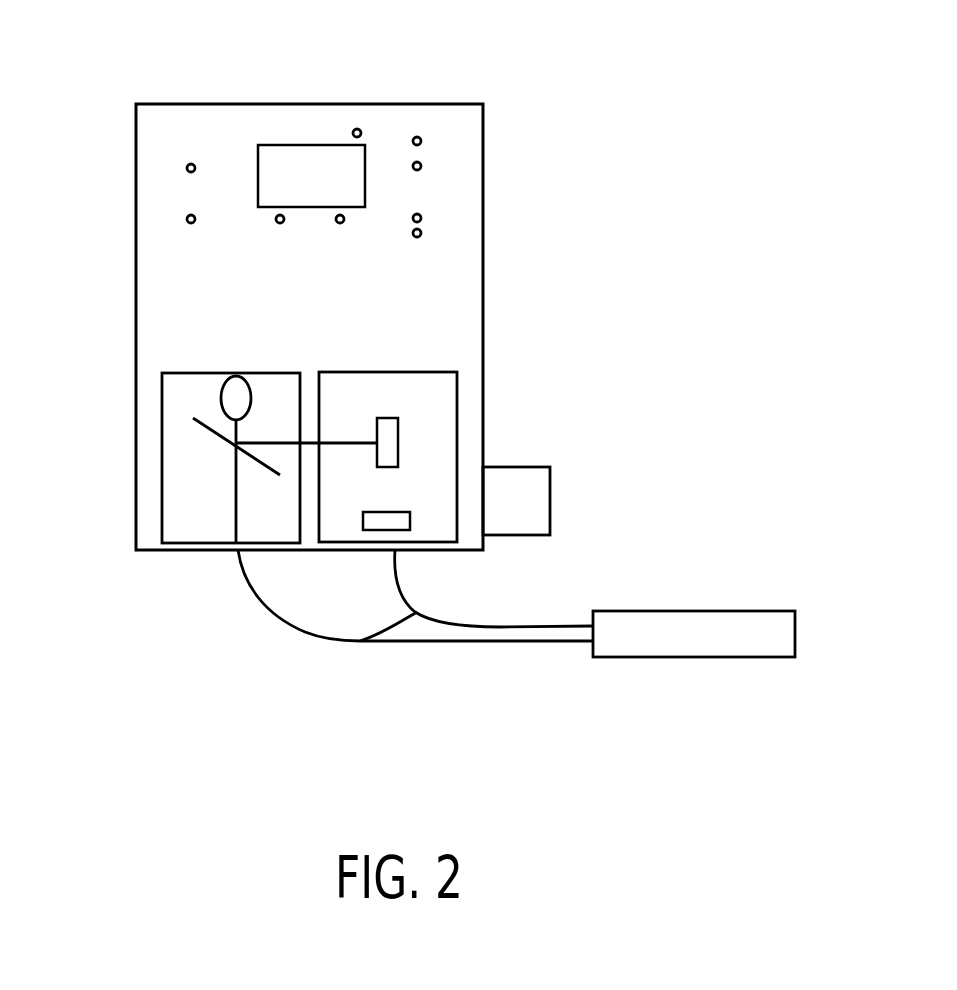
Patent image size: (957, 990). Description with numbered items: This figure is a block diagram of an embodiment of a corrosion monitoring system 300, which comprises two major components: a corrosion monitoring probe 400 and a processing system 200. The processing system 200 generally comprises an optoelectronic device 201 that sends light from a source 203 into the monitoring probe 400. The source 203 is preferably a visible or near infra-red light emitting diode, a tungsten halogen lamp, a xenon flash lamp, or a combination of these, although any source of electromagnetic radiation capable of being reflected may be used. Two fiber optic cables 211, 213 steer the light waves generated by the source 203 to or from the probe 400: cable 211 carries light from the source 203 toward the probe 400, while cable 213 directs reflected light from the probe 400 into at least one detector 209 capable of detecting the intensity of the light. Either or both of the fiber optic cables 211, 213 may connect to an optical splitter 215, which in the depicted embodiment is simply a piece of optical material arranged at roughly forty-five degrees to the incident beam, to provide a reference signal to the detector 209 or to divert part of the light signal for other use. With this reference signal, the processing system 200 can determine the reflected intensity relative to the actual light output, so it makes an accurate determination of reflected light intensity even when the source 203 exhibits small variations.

The processing system 200 is at (272, 104).
The optoelectronic device 201 is at (302, 383).
The source 203 is at (221, 395).
The optical splitter 215 is at (206, 424).
The detector 209 is at (459, 461).
The fiber optic cable 211 is at (243, 567).
The fiber optic cable 213 is at (358, 641).
The corrosion monitoring probe 400 is at (750, 623).
The corrosion monitoring system 300 is at (715, 135).